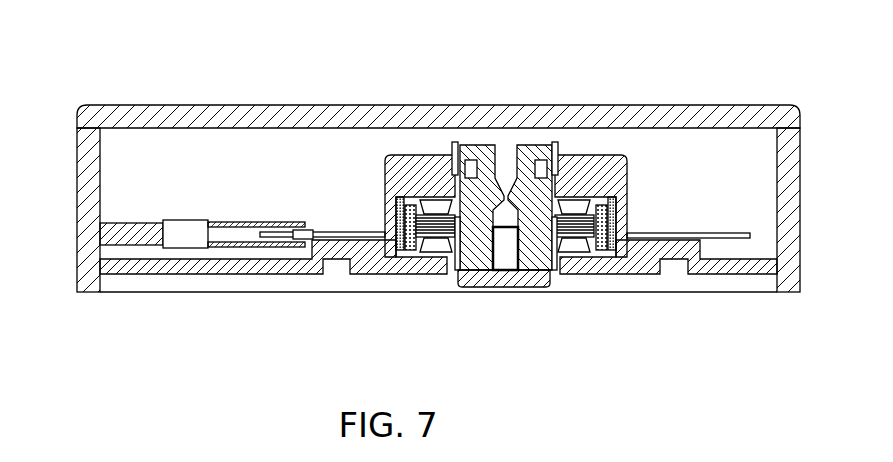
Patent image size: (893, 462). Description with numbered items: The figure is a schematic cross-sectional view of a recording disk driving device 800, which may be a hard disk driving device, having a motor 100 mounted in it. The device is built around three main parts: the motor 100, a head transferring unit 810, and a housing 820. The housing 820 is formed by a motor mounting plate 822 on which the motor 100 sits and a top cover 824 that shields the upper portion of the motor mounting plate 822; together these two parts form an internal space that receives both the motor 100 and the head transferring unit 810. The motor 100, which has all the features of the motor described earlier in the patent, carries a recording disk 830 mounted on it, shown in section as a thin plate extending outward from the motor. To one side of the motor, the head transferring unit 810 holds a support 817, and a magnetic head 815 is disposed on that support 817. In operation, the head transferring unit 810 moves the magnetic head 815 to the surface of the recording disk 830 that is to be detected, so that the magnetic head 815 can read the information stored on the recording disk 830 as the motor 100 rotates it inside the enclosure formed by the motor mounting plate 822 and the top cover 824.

The recording disk driving device 800 is at (416, 36).
The housing 820 is at (68, 180).
The top cover 824 is at (252, 117).
The motor mounting plate 822 is at (792, 266).
The head transferring unit 810 is at (184, 256).
The magnetic head 815 is at (307, 252).
The support 817 is at (258, 247).
The recording disk 830 is at (697, 234).
The motor 100 is at (542, 143).